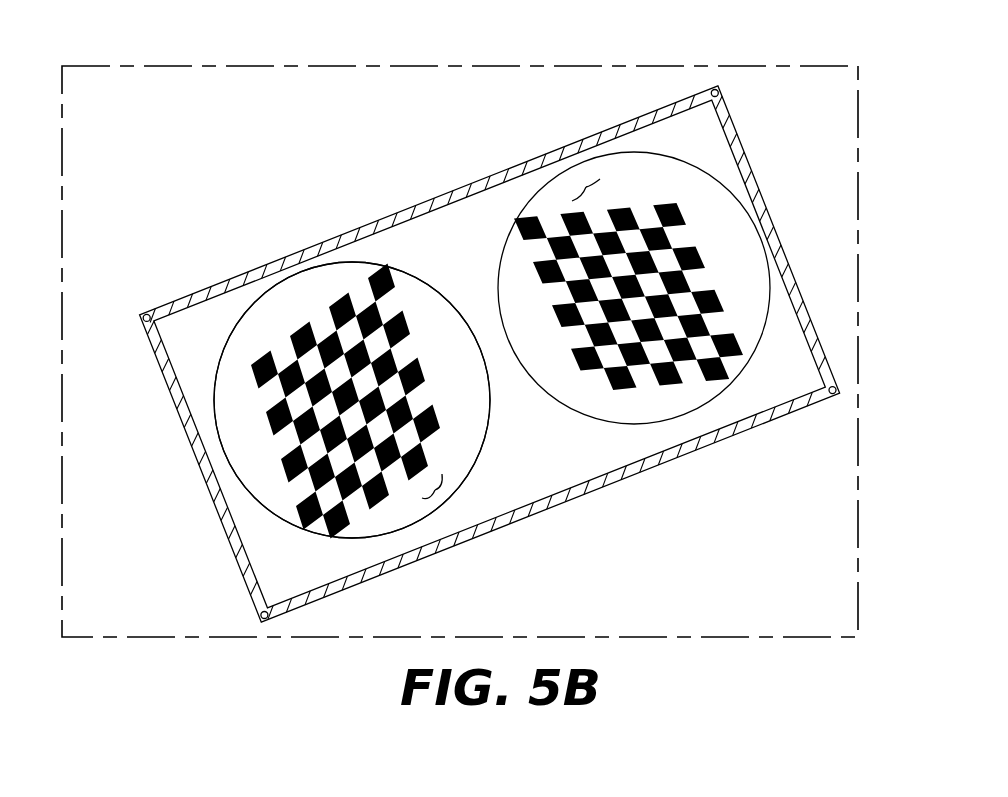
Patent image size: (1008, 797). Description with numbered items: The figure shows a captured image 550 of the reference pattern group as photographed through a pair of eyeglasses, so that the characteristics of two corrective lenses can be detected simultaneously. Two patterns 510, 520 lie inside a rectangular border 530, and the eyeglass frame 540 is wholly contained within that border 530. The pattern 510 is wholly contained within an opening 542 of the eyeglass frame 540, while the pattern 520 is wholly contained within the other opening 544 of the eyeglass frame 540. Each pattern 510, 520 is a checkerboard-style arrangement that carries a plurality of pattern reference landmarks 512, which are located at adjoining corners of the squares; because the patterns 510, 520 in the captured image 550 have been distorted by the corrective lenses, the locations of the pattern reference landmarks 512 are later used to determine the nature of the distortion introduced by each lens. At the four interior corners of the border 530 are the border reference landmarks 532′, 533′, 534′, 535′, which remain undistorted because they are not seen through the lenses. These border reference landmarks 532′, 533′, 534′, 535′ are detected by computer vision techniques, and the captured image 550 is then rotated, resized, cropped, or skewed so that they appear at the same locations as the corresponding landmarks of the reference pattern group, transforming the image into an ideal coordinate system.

The captured image 550 is at (189, 62).
The border 530 is at (212, 482).
The border reference landmark 532′ is at (152, 321).
The border reference landmark 533′ is at (722, 97).
The border reference landmark 534′ is at (270, 608).
The border reference landmark 535′ is at (828, 400).
The pattern 510 is at (428, 415).
The pattern 520 is at (689, 388).
The pattern reference landmark 512 is at (332, 332).
The eyeglass frame 540 is at (213, 360).
The opening 542 is at (435, 490).
The opening 544 is at (586, 187).